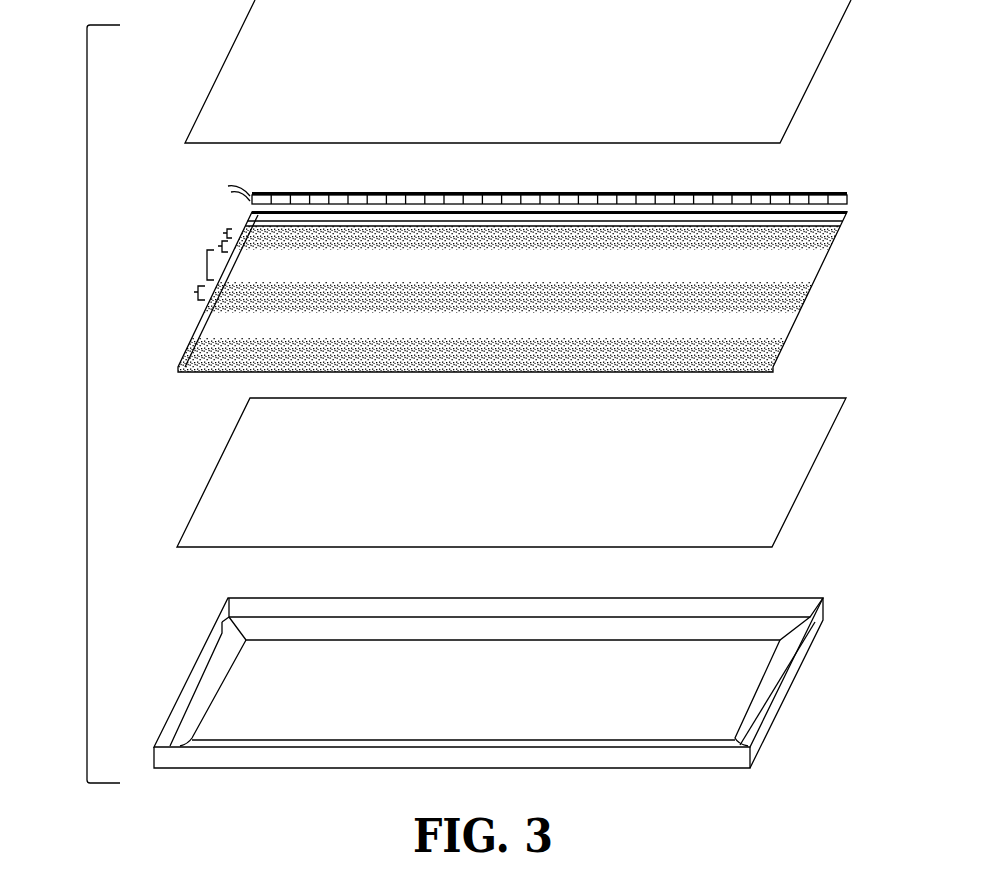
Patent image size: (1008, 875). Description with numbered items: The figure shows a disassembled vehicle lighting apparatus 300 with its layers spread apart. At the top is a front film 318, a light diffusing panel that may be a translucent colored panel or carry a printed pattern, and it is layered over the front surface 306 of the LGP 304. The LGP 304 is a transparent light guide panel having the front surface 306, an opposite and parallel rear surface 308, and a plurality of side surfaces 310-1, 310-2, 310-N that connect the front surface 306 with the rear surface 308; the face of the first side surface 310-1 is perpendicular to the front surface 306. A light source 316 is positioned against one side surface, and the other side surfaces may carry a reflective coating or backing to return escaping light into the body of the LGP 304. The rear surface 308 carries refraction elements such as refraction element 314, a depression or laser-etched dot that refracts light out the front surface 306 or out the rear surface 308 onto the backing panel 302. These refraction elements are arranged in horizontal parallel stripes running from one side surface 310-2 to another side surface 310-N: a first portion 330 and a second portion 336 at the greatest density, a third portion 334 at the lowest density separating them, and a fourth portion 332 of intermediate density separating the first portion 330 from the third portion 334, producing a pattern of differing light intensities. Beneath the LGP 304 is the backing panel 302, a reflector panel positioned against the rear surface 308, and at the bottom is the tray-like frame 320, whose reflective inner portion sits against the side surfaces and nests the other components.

The vehicle lighting apparatus 300 is at (87, 388).
The backing panel 302 is at (815, 462).
The LGP 304 is at (843, 216).
The front surface 306 is at (756, 323).
The rear surface 308 is at (788, 338).
The first side surface 310-1 is at (822, 218).
The side surface 310-2 is at (247, 230).
The side surface 310-N is at (822, 264).
The refraction element 314 is at (830, 236).
The light source 316 is at (800, 193).
The front film 318 is at (830, 43).
The frame 320 is at (787, 682).
The first portion 330 is at (223, 233).
The fourth portion 332 is at (218, 246).
The third portion 334 is at (207, 265).
The second portion 336 is at (194, 292).